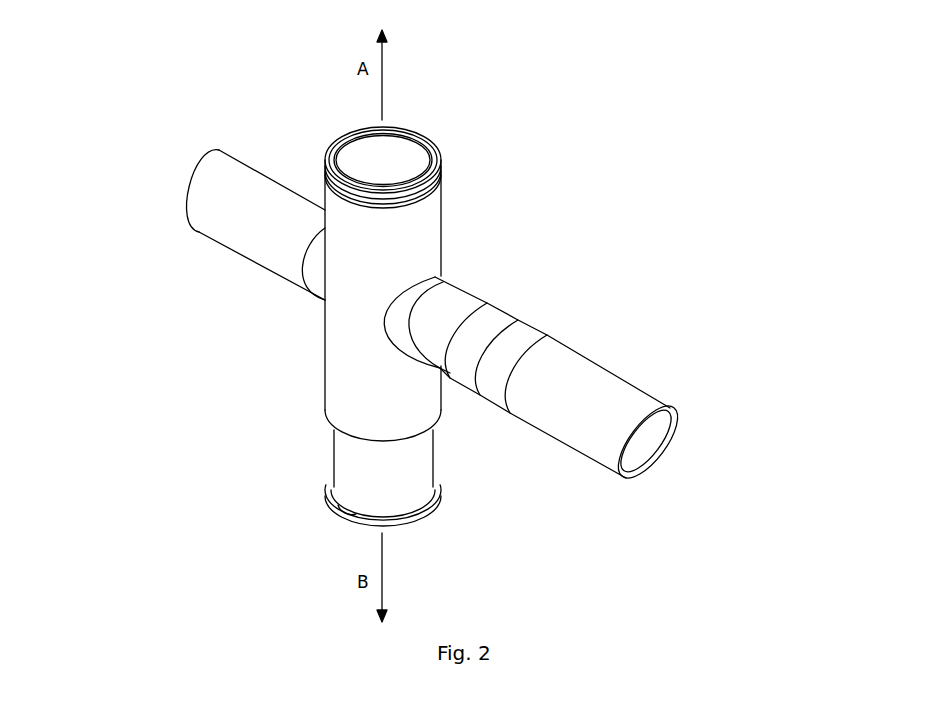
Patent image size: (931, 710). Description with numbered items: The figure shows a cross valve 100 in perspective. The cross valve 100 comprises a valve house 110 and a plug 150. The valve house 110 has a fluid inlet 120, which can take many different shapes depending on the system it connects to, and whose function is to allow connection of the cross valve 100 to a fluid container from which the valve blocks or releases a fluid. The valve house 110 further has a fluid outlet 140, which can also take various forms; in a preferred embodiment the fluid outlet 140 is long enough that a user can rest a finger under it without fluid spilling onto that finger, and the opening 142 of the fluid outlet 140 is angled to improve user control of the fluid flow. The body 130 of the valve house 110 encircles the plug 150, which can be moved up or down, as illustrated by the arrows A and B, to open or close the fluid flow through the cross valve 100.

The cross valve 100 is at (682, 93).
The valve house 110 is at (347, 320).
The fluid inlet 120 is at (570, 387).
The body 130 is at (355, 397).
The fluid outlet 140 is at (257, 205).
The opening 142 is at (190, 210).
The plug 150 is at (413, 479).